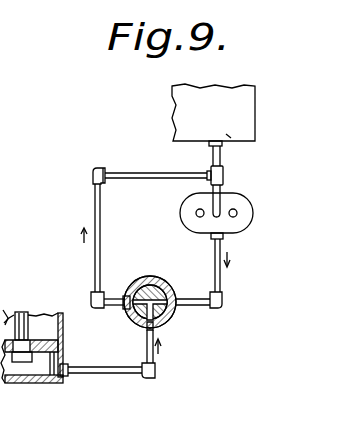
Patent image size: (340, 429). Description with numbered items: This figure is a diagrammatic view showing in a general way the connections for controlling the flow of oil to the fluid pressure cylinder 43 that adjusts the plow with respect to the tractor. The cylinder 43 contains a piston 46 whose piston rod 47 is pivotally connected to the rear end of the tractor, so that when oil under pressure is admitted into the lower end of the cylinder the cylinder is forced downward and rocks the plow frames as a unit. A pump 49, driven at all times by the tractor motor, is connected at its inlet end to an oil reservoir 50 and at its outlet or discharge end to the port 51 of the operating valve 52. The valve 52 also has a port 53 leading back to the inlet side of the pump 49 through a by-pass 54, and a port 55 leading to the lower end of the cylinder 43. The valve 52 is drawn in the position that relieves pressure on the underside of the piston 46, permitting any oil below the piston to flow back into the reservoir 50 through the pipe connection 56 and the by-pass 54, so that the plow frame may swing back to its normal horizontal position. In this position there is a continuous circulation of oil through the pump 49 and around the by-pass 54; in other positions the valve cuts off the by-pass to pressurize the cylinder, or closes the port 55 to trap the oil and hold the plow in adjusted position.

The fluid pressure cylinder 43 is at (64, 330).
The piston 46 is at (46, 322).
The piston rod 47 is at (22, 311).
The pump 49 is at (238, 229).
The oil reservoir 50 is at (242, 86).
The port 51 is at (176, 309).
The operating valve 52 is at (153, 298).
The port 53 is at (127, 306).
The by-pass 54 is at (101, 212).
The port 55 is at (158, 326).
The pipe connection 56 is at (125, 375).